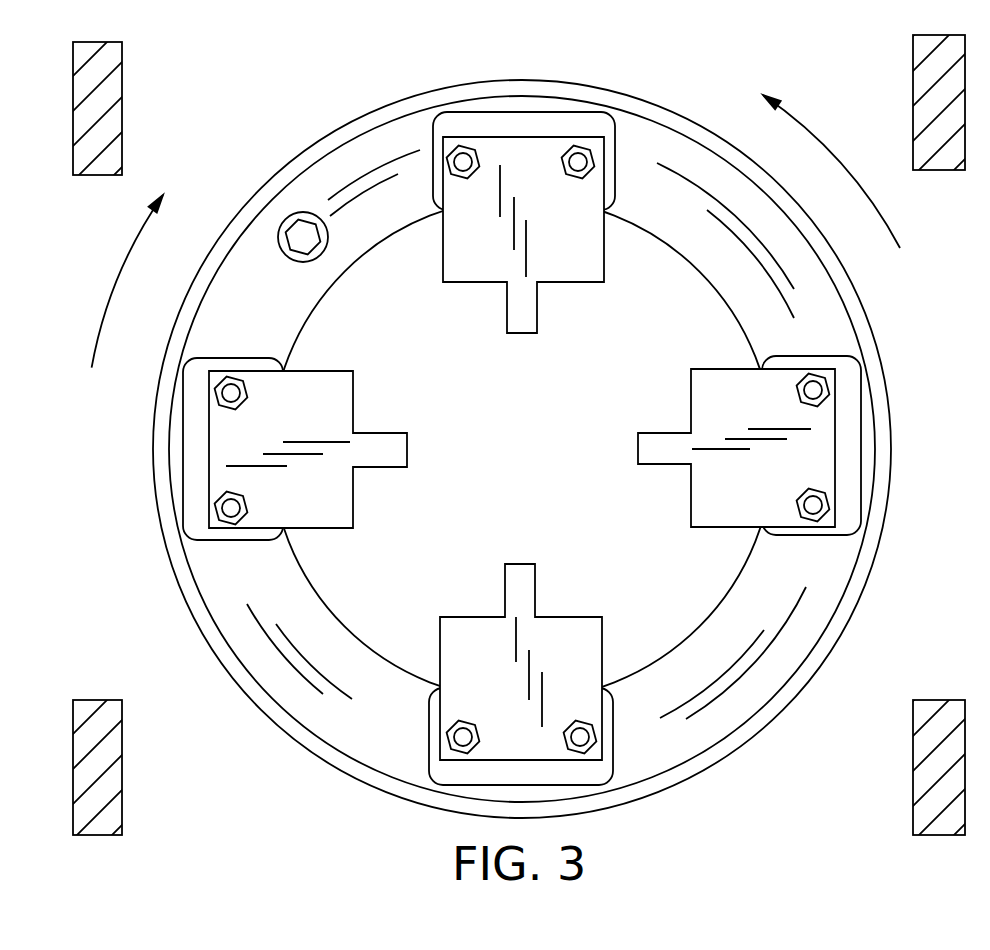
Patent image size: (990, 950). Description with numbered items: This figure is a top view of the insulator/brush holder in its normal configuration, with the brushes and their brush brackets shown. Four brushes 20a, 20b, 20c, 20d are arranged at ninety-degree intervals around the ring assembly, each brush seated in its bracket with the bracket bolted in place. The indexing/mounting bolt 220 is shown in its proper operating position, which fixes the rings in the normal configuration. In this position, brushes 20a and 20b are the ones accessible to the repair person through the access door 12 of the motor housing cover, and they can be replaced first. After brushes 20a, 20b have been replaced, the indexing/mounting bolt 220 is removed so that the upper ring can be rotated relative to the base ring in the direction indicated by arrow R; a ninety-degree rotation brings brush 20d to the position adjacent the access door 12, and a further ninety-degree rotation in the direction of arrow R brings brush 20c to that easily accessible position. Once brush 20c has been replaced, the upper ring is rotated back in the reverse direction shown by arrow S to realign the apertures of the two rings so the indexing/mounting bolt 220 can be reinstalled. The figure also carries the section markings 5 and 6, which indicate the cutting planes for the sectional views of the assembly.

The access door 12 is at (40, 428).
The brush 20a is at (332, 411).
The brush 20b is at (565, 263).
The brush 20c is at (708, 397).
The brush 20d is at (582, 643).
The indexing/mounting bolt 220 is at (280, 228).
The section line 5- 5 is at (935, 403).
The section line 6- 6 is at (413, 257).
The arrow R is at (127, 252).
The arrow S is at (888, 223).